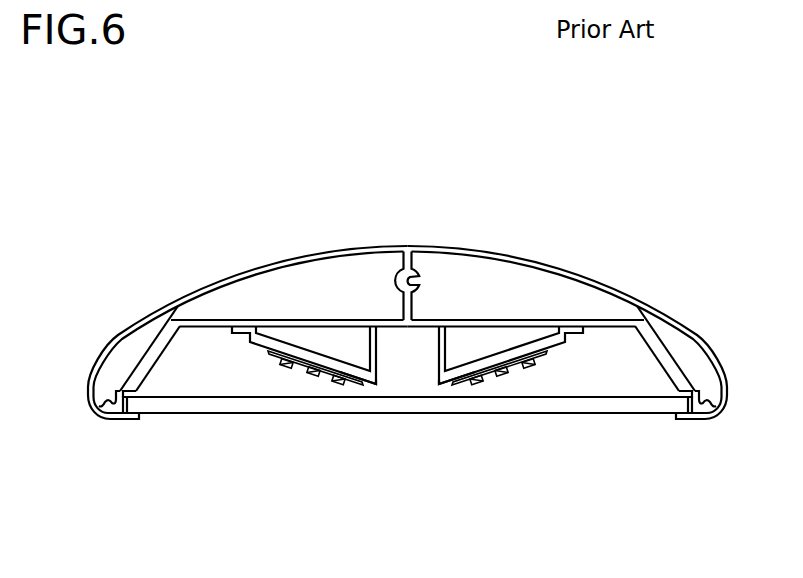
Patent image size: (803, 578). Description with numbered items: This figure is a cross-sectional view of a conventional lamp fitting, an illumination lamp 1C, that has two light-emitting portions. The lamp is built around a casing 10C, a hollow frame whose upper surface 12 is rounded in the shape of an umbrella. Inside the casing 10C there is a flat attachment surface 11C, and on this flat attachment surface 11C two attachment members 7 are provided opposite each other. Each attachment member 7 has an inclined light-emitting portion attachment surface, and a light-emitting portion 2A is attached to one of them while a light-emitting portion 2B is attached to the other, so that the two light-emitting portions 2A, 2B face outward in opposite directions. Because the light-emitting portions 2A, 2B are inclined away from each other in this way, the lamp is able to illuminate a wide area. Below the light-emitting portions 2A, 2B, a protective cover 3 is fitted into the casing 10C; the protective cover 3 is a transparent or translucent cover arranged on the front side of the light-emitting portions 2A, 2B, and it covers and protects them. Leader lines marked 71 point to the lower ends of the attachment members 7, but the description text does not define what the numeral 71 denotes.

The illumination lamp 1C is at (548, 200).
The casing 10C is at (448, 245).
The flat attachment surface 11C is at (310, 321).
The upper surface 12 is at (204, 288).
The protective cover 3 is at (173, 405).
The light-emitting portion 2A is at (297, 374).
The light-emitting portion 2B is at (518, 375).
The attachment member 7 is at (436, 379).
The holder support portion 71 is at (365, 383).